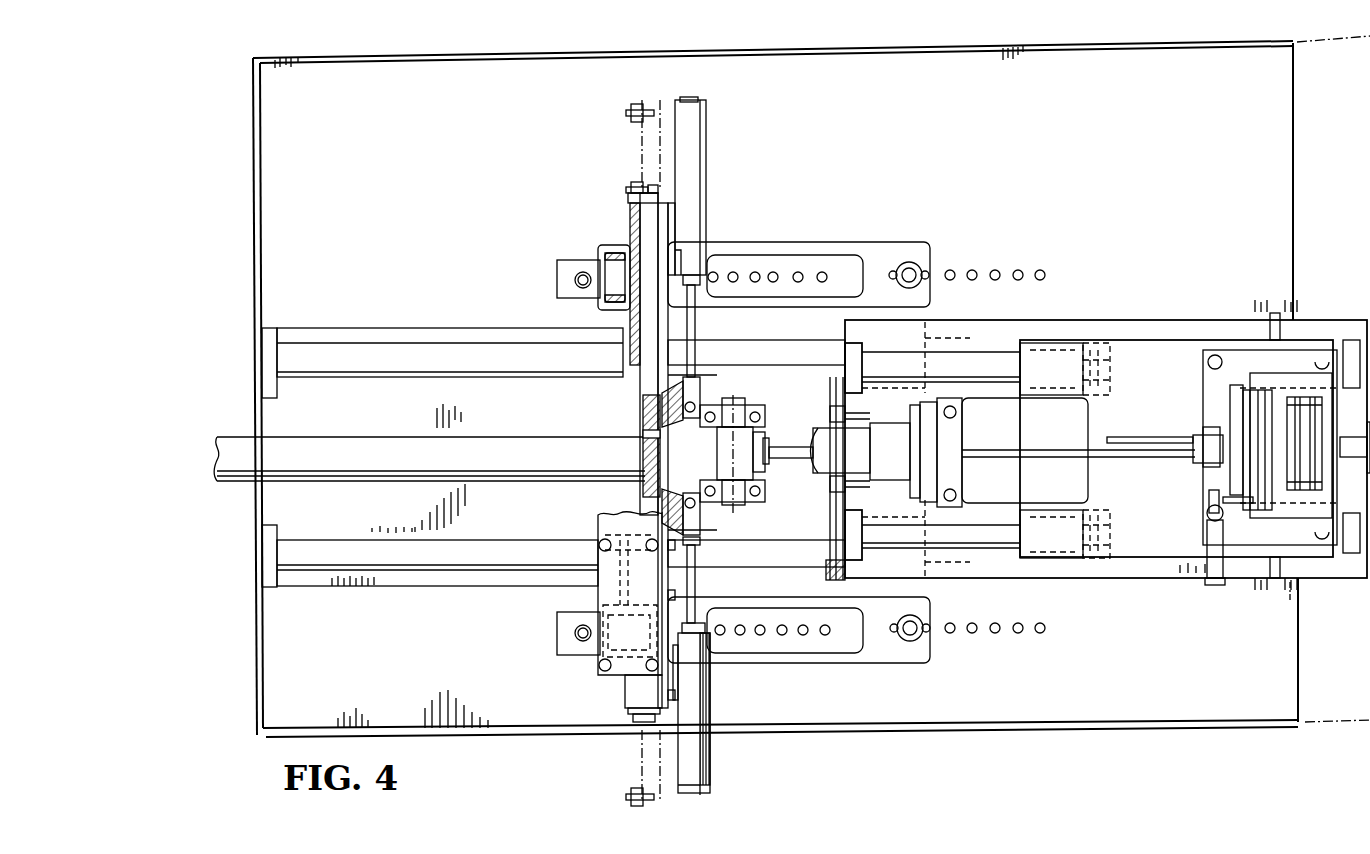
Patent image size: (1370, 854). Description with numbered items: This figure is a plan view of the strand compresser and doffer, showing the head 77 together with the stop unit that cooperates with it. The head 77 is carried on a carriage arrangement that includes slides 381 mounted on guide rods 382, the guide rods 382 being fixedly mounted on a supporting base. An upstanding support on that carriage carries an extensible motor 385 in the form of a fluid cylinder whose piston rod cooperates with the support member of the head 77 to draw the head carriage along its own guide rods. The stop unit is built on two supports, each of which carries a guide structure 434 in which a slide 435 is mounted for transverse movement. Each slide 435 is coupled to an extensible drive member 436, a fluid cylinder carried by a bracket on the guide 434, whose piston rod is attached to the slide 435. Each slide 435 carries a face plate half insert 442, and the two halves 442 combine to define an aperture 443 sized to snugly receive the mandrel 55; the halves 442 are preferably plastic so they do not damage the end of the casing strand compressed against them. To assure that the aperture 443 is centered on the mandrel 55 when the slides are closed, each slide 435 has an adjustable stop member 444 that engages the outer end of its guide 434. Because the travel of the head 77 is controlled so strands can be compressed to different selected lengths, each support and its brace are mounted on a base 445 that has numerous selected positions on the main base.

The mandrel 55 is at (990, 455).
The head 77 is at (748, 218).
The slides 381 is at (1060, 352).
The guide rods 382 is at (985, 360).
The extensible motor 385 is at (816, 476).
The guide structure 434 is at (633, 215).
The slide 435 is at (645, 230).
The extensible drive member 436 is at (703, 158).
The face plate half insert 442 is at (643, 427).
The aperture 443 is at (642, 470).
The adjustable stop member 444 is at (632, 194).
The base 445 is at (835, 255).